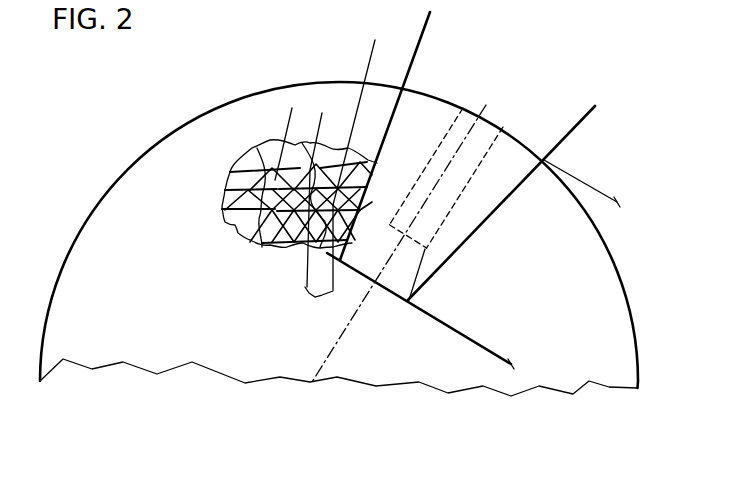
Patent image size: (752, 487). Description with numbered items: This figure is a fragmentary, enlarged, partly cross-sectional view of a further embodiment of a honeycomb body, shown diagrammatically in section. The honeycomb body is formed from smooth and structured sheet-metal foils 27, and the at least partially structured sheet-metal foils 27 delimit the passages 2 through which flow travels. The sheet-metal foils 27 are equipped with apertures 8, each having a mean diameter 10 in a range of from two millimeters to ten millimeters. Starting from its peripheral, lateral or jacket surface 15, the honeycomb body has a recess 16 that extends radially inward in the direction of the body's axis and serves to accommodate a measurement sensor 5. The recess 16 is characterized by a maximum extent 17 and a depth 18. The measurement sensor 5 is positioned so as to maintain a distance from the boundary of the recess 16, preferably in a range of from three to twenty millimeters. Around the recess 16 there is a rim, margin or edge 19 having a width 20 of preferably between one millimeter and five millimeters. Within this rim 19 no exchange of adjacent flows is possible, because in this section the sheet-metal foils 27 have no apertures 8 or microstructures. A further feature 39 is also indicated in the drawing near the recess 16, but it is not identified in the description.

The passages 2 is at (240, 205).
The measurement sensor 5 is at (447, 151).
The apertures 8 is at (264, 240).
The mean diameter 10 is at (260, 107).
The jacket surface 15 is at (113, 185).
The recess 16 is at (505, 139).
The maximum extent 17 is at (428, 14).
The depth 18 is at (610, 203).
The rim 19 is at (316, 265).
The width 20 is at (446, 65).
The sheet-metal foils 27 is at (247, 170).
The cutting edge 39 is at (463, 300).